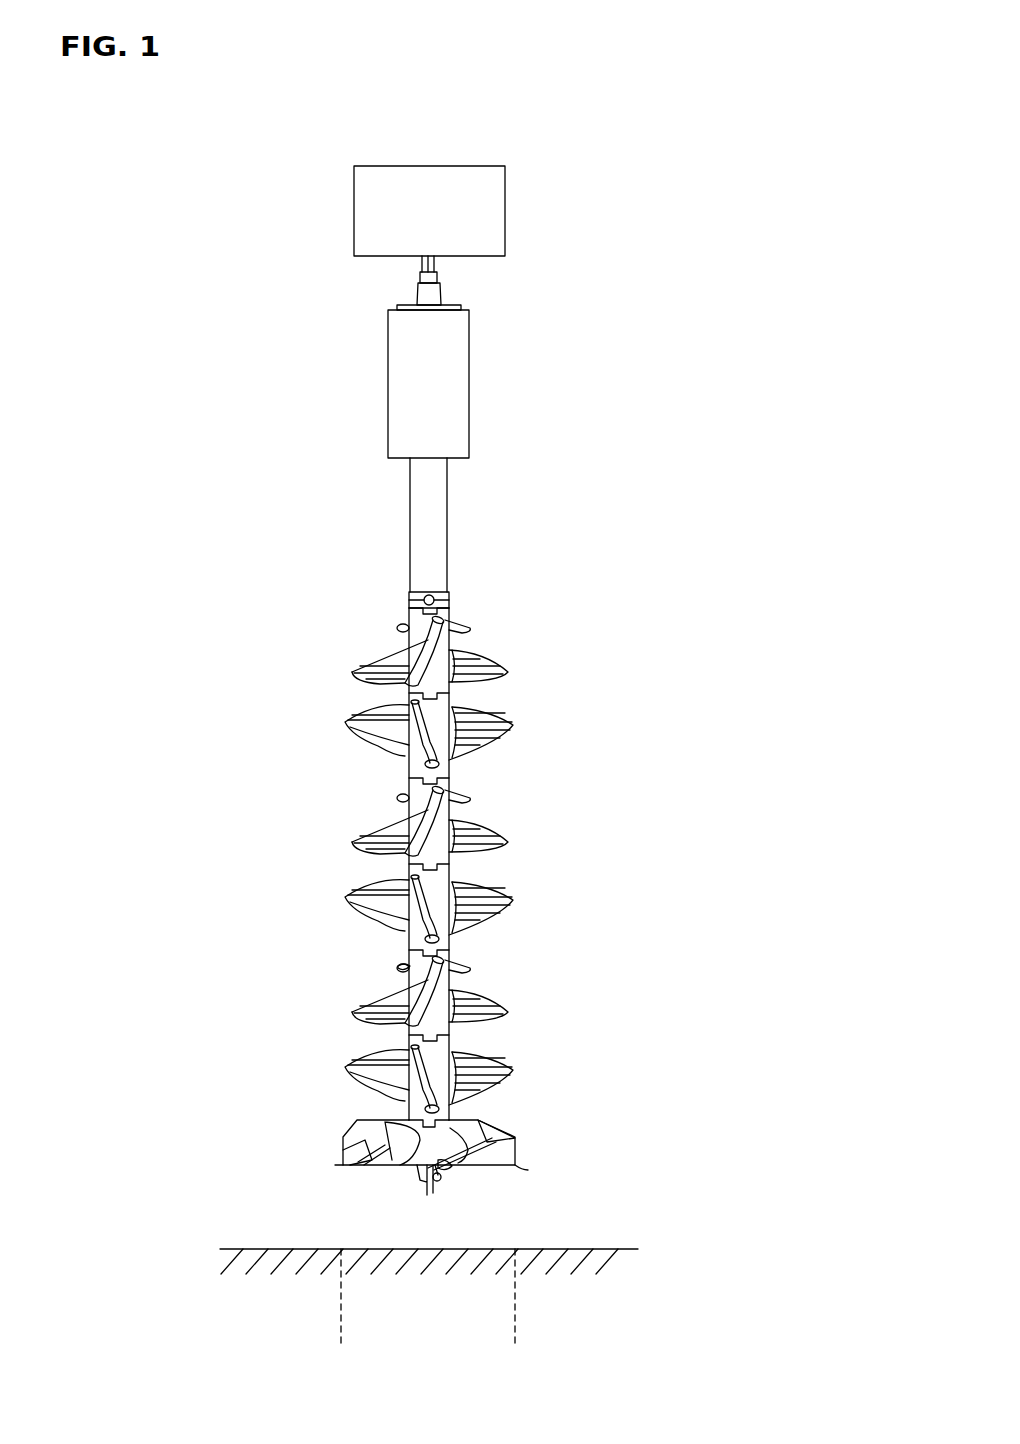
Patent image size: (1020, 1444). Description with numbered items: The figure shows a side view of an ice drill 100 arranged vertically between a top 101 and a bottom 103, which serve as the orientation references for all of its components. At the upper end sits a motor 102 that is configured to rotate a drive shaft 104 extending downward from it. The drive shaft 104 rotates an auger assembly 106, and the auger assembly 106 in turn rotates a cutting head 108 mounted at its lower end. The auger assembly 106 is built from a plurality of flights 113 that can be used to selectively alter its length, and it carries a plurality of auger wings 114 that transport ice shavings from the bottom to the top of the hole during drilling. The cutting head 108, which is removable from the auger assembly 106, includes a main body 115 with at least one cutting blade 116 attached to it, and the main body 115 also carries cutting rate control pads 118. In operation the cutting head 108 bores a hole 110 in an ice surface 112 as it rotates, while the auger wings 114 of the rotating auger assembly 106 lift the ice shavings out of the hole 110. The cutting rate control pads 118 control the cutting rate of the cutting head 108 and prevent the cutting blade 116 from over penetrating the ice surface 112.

The ice drill 100 is at (443, 673).
The top 101 is at (478, 230).
The motor 102 is at (484, 224).
The bottom 103 is at (213, 1204).
The drive shaft 104 is at (434, 272).
The auger assembly 106 is at (453, 789).
The cutting head 108 is at (437, 1118).
The hole 110 is at (515, 1308).
The ice surface 112 is at (557, 1249).
The flights 113 is at (415, 742).
The auger wings 114 is at (495, 900).
The main body 115 is at (372, 1138).
The cutting blade 116 is at (410, 968).
The cutting rate control pads 118 is at (345, 1166).